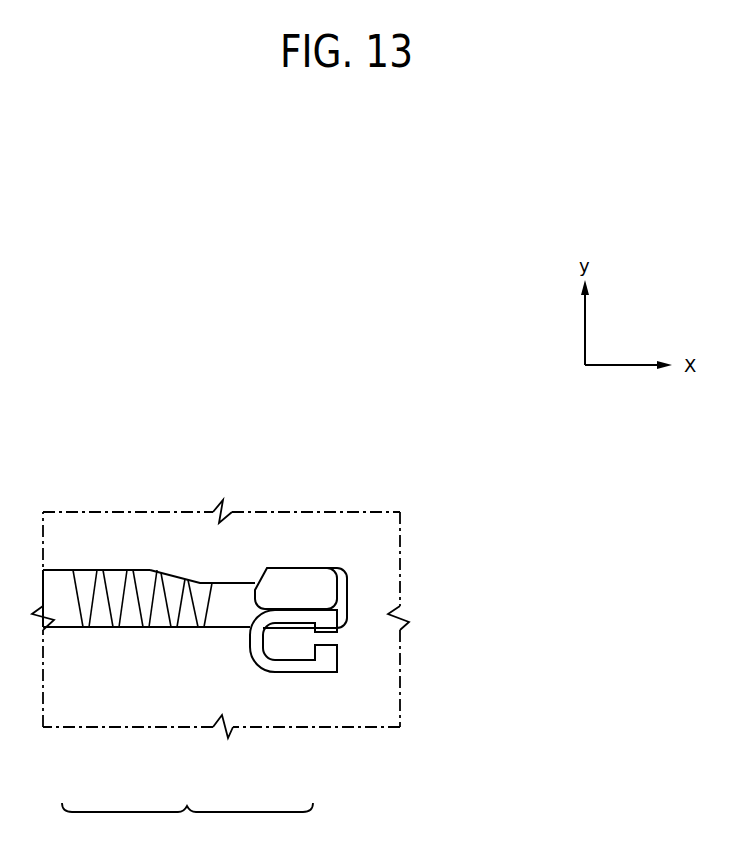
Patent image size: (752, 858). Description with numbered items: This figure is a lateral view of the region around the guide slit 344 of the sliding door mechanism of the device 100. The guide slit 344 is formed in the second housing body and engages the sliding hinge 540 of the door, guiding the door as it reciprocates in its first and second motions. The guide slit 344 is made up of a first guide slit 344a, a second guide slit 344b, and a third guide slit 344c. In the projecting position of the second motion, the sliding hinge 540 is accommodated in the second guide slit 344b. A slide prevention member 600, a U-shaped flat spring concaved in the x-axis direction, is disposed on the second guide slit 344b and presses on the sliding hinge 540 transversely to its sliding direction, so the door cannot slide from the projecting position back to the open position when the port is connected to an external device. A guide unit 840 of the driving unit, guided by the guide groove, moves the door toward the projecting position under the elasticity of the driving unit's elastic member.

The display device 100 is at (401, 425).
The guide slit 344 is at (187, 822).
The first guide slit 344a is at (70, 570).
The second guide slit 344b is at (303, 570).
The third guide slit 344c is at (222, 580).
The sliding hinge 540 is at (287, 582).
The slide prevention member 600 is at (337, 648).
The guide unit 840 is at (150, 590).